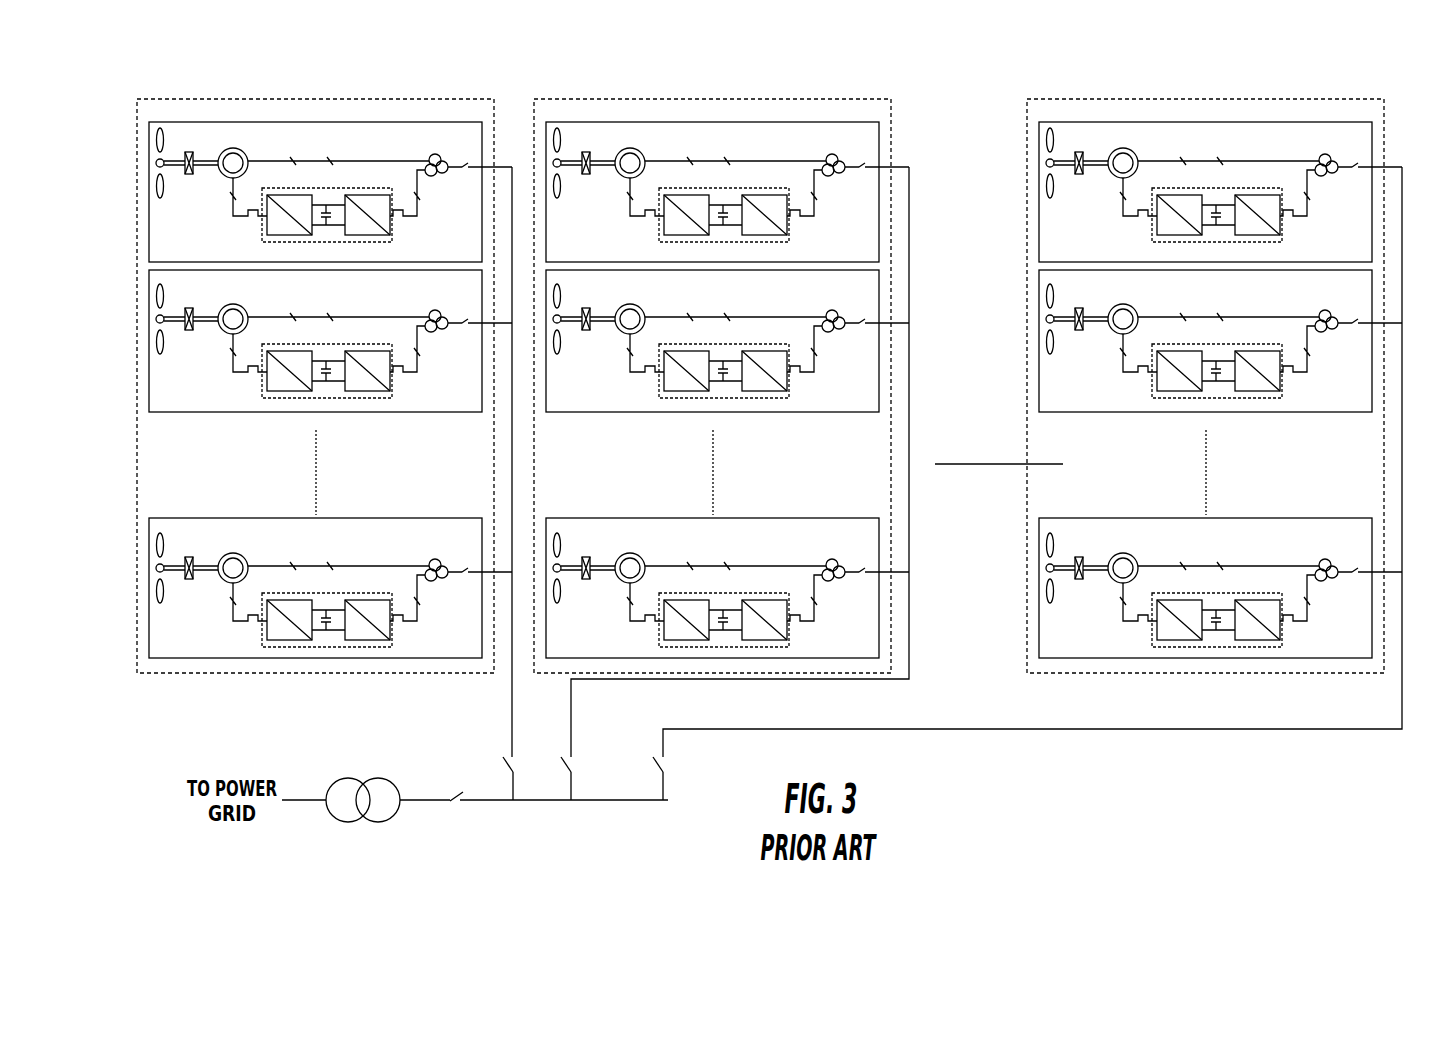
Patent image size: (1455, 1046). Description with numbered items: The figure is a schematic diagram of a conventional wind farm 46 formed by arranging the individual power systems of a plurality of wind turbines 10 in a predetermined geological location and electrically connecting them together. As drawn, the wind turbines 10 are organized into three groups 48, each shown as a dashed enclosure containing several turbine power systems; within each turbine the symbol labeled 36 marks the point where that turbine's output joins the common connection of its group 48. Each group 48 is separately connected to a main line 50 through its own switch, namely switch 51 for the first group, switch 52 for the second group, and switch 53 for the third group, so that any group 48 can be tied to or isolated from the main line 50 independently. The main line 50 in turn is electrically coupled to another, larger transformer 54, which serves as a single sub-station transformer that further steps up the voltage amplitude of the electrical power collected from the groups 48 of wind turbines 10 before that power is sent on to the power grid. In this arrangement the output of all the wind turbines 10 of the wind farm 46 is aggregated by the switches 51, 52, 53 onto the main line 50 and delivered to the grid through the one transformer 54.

The wind turbine 10 is at (1039, 585).
The turbine transformer / switch 36 is at (890, 352).
The wind farm 46 is at (1420, 155).
The group 48 is at (212, 673).
The main line 50 is at (636, 802).
The switch 51 is at (498, 763).
The switch 52 is at (558, 763).
The switch 53 is at (646, 763).
The transformer 54 is at (362, 770).